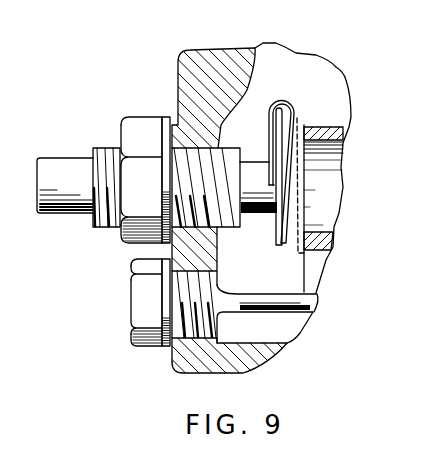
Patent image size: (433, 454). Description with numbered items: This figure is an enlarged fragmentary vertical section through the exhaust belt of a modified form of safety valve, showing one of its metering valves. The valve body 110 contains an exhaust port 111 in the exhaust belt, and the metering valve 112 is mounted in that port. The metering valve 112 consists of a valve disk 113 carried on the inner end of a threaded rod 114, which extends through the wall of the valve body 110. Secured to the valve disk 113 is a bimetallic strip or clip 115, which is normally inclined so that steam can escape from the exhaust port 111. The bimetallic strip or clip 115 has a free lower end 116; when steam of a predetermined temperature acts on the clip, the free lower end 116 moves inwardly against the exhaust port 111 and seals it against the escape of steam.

The valve body 110 is at (178, 92).
The exhaust port 111 is at (331, 204).
The metering valve 112 is at (118, 143).
The valve disk 113 is at (280, 110).
The threaded rod 114 is at (88, 215).
The bimetallic strip or clip 115 is at (289, 103).
The free lower end 116 is at (280, 247).